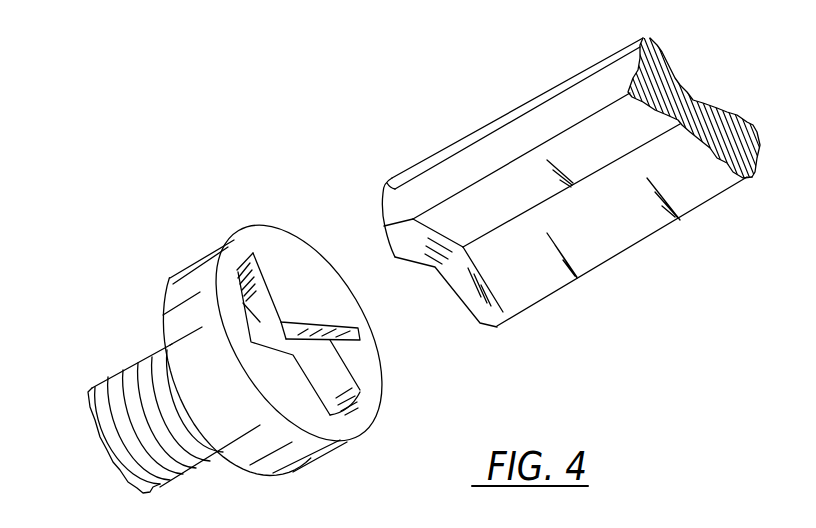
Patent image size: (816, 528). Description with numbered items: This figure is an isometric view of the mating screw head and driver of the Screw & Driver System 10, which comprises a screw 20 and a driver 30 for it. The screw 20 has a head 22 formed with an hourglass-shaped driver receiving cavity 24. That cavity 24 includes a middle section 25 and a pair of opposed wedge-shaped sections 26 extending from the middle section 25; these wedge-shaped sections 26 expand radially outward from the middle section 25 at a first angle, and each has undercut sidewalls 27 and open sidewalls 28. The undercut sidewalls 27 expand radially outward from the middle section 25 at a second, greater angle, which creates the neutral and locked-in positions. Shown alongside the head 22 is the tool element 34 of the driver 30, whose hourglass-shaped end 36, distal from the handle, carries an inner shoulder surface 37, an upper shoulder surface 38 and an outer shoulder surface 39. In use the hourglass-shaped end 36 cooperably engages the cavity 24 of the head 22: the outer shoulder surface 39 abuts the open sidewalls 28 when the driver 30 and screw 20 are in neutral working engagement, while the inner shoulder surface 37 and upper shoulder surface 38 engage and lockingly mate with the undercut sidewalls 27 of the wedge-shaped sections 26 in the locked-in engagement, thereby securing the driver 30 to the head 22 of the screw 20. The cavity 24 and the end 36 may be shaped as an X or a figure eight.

The Screw & Driver System 10 is at (288, 122).
The screw 20 is at (145, 272).
The head 22 is at (332, 455).
The hourglass-shaped driver receiving cavity 24 is at (350, 356).
The middle section 25 is at (342, 328).
The pair of opposed wedge-shaped sections 26 is at (281, 305).
The undercut sidewalls 27 is at (258, 312).
The open sidewalls 28 is at (358, 390).
The driver 30 is at (485, 112).
The tool element 34 is at (622, 236).
The hourglass-shaped end 36 is at (413, 170).
The inner shoulder surface 37 is at (468, 302).
The upper shoulder surface 38 is at (385, 231).
The outer shoulder surface 39 is at (383, 207).